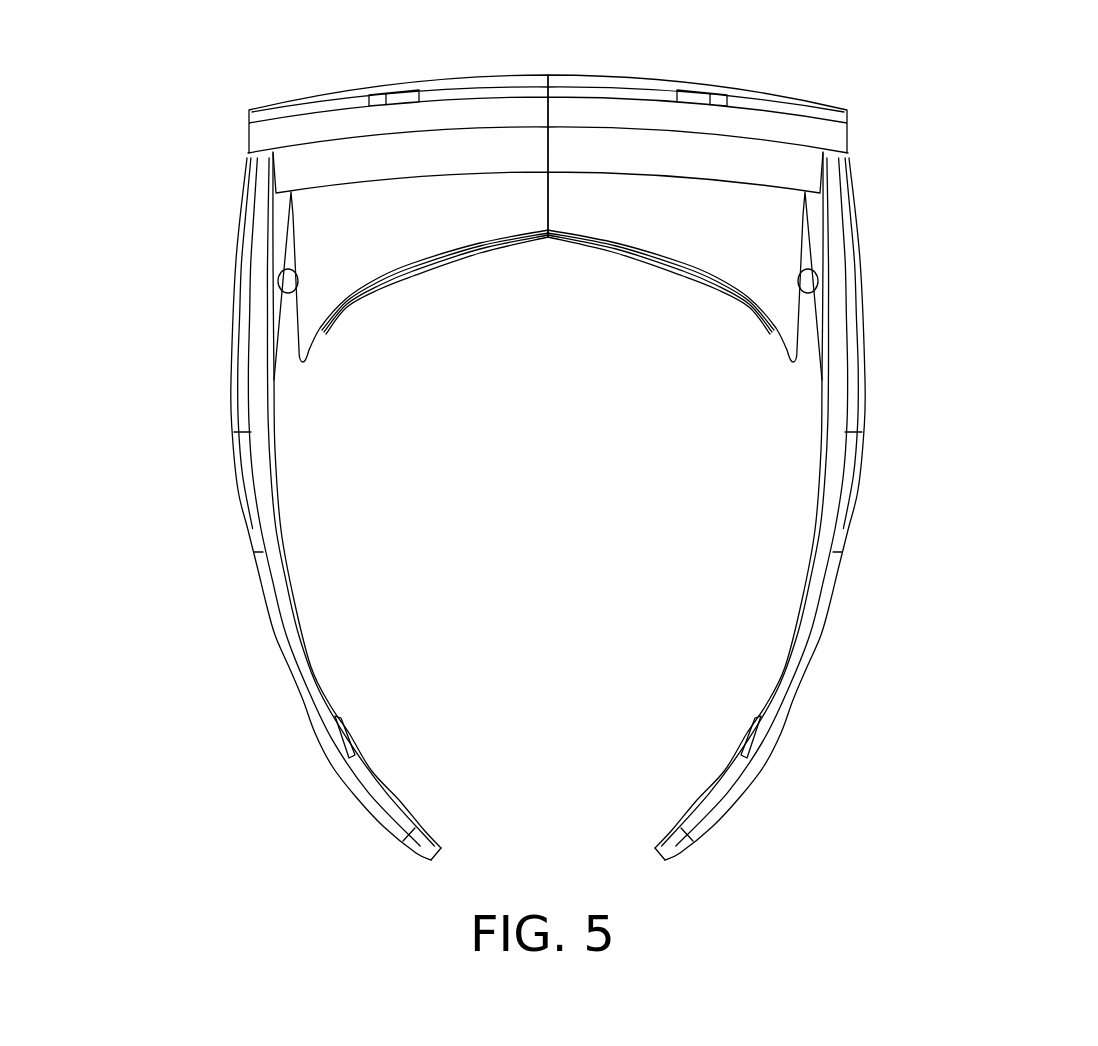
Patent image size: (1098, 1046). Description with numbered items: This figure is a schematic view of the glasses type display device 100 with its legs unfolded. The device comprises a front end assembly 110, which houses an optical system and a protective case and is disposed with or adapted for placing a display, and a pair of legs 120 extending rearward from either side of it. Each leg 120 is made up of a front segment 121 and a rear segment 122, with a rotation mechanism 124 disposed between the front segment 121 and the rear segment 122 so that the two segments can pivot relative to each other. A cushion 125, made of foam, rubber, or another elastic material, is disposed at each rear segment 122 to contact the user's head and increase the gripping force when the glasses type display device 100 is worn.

The glasses type display device 100 is at (587, 451).
The front end assembly 110 is at (358, 123).
The leg 120 is at (547, 506).
The front segment 121 is at (815, 217).
The rear segment 122 is at (832, 360).
The rotation mechanism 124 is at (815, 283).
The cushion 125 is at (728, 775).